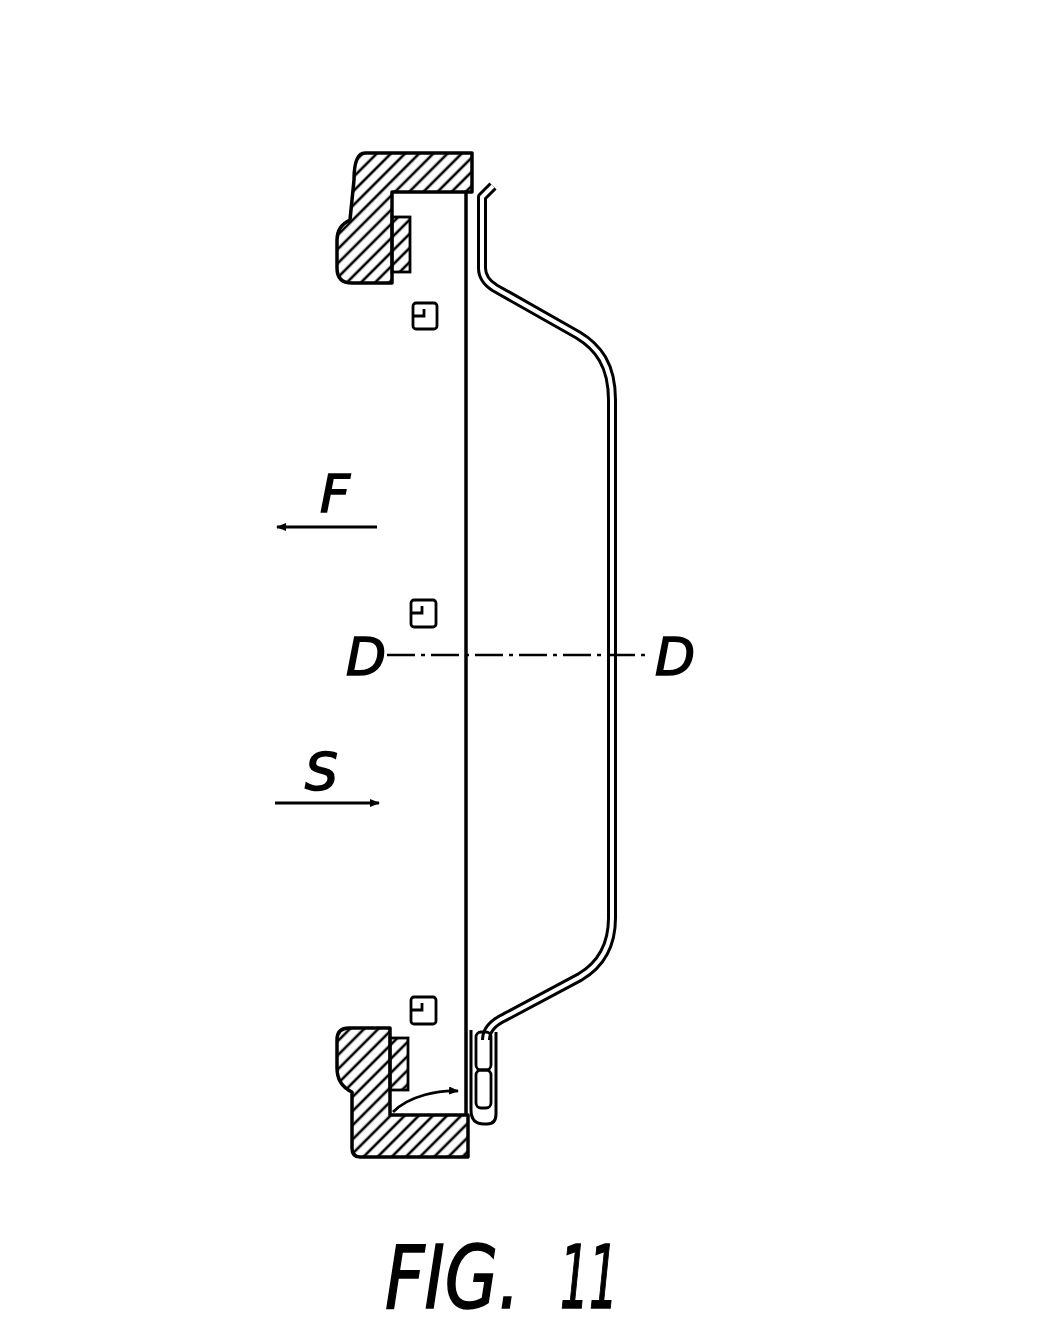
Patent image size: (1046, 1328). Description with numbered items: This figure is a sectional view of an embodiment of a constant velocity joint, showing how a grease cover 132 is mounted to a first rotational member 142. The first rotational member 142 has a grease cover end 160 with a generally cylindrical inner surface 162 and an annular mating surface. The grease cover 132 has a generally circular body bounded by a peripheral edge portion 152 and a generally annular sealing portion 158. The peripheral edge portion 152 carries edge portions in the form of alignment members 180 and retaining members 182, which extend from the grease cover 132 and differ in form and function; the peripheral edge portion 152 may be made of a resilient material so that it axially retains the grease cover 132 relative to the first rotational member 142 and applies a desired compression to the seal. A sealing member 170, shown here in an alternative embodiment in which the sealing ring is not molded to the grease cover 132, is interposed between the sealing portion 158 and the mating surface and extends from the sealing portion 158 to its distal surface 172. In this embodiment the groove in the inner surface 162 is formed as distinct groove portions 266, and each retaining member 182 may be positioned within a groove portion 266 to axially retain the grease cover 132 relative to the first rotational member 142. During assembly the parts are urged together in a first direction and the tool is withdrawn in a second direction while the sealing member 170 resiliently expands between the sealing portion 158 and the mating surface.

The grease cover 132 is at (582, 280).
The first rotational member 142 is at (394, 153).
The peripheral edge portion 152 is at (600, 1059).
The sealing portion 158 is at (355, 1148).
The grease cover end 160 is at (497, 151).
The inner surface 162 is at (503, 654).
The sealing member 170 is at (337, 247).
The distal surface 172 is at (455, 937).
The alignment member 180 is at (499, 1090).
The retaining member 182 is at (499, 1048).
The groove portion 266 is at (413, 315).